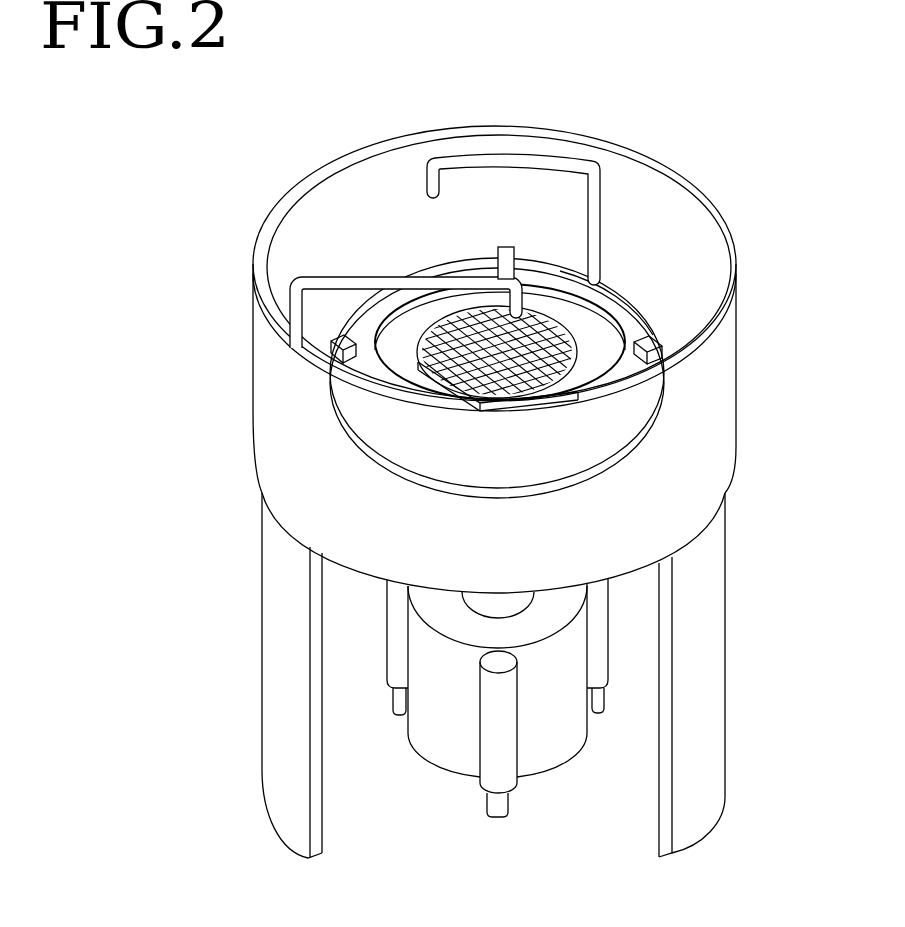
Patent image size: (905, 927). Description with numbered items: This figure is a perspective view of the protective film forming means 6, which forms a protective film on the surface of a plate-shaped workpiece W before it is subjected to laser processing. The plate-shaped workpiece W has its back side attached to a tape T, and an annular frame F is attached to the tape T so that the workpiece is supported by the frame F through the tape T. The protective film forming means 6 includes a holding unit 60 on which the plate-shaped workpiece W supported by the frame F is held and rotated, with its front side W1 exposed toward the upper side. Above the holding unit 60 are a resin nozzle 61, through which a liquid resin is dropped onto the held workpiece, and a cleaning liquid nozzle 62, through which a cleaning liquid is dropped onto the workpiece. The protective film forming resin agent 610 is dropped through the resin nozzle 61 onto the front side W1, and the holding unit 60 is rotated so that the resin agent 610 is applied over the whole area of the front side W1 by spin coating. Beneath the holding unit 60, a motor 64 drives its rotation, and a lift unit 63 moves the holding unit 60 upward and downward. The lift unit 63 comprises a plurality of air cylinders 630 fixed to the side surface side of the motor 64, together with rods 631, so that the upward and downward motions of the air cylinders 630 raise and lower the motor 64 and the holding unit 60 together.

The protective film forming means 6 is at (494, 496).
The holding unit 60 is at (620, 293).
The protective film forming resin agent 610 is at (495, 406).
The resin nozzle 61 is at (340, 282).
The cleaning liquid nozzle 62 is at (497, 156).
The lift unit 63 is at (492, 749).
The air cylinders 630 is at (397, 623).
The rods 631 is at (396, 710).
The motor 64 is at (560, 742).
The plate-shaped workpiece W is at (562, 391).
The front side W1 is at (557, 328).
The tape T is at (594, 376).
The annular frame F is at (630, 367).